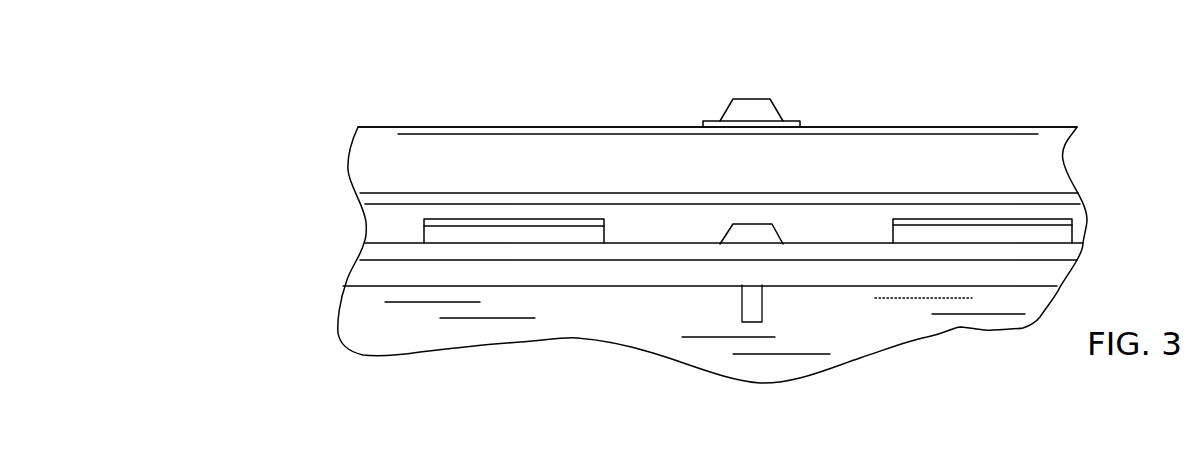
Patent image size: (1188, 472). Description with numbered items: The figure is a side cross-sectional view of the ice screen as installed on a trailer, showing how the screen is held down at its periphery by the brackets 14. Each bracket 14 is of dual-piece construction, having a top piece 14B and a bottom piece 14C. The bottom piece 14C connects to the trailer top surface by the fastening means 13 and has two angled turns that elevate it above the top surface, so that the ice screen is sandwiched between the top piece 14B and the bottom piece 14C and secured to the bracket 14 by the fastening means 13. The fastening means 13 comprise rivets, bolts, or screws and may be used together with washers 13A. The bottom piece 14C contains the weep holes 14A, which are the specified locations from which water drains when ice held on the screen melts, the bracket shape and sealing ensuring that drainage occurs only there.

The fastening means 13 is at (778, 232).
The washers 13A is at (705, 121).
The brackets 14 is at (337, 133).
The weep holes 14A is at (503, 230).
The top piece 14B is at (360, 182).
The bottom piece 14C is at (380, 232).